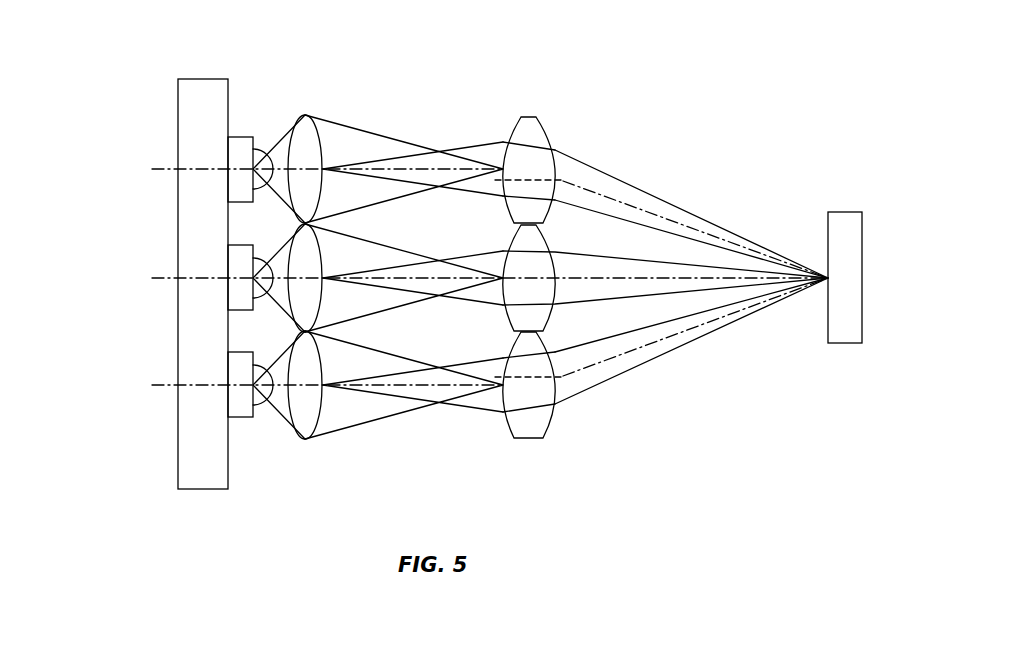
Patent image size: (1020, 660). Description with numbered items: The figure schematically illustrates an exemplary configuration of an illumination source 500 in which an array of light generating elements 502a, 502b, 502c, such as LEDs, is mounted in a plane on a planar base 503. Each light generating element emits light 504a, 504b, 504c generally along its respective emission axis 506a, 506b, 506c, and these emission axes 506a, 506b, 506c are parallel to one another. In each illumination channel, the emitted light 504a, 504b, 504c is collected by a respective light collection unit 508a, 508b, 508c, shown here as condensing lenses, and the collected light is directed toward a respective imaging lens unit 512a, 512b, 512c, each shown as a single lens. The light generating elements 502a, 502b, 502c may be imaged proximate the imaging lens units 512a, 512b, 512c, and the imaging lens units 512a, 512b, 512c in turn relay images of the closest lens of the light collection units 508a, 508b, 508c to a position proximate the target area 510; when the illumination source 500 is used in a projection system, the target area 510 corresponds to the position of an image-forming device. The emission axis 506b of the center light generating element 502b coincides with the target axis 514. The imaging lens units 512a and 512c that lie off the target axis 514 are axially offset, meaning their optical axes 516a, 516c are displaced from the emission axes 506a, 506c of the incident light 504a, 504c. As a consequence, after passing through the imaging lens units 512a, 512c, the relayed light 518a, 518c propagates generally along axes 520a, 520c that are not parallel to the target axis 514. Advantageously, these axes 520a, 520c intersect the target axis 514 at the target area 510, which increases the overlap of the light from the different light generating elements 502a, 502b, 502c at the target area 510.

The illumination source 500 is at (697, 85).
The light generating element 502a is at (252, 168).
The light generating element 502b is at (252, 278).
The light generating element 502c is at (252, 385).
The planar base 503 is at (203, 490).
The light 504a is at (277, 142).
The light 504b is at (283, 313).
The light 504c is at (275, 410).
The emission axis 506a is at (162, 172).
The emission axis 506b is at (162, 281).
The emission axis 506c is at (162, 389).
The light collection unit 508a is at (306, 116).
The light collection unit 508b is at (303, 222).
The light collection unit 508c is at (307, 440).
The target area 510 is at (827, 232).
The imaging lens unit 512a is at (528, 117).
The imaging lens unit 512b is at (513, 237).
The imaging lens unit 512c is at (530, 439).
The target axis 514 is at (708, 279).
The optical axis 516a is at (533, 178).
The optical axis 516c is at (541, 380).
The relayed light 518a is at (623, 182).
The relayed light 518c is at (635, 367).
The axis 520a is at (702, 232).
The axis 520c is at (668, 336).